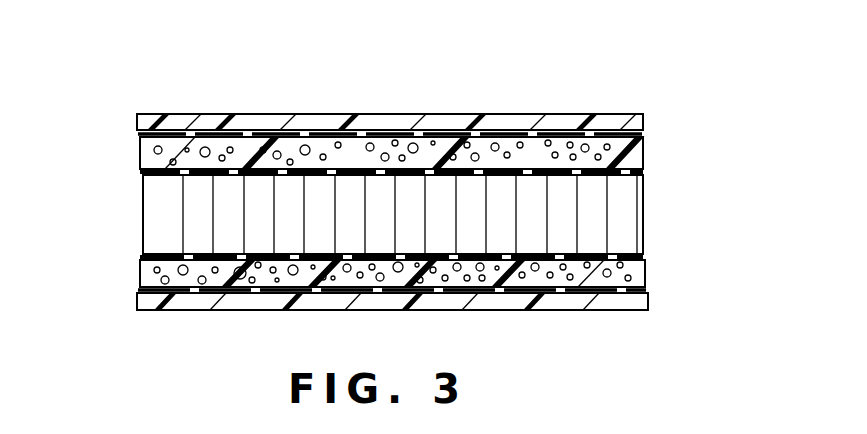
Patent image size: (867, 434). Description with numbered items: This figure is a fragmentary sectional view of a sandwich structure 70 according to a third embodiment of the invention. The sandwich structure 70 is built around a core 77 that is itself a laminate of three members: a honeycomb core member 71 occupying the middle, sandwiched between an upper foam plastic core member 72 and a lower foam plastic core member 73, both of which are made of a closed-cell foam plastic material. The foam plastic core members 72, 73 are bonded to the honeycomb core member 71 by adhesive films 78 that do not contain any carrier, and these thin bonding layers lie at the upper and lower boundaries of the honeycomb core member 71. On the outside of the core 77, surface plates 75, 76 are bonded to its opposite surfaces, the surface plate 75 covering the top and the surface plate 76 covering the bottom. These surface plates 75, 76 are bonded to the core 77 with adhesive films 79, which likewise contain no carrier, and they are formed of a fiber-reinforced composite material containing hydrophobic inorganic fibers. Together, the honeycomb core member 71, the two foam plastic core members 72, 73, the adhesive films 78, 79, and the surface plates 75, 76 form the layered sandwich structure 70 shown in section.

The sandwich structure 70 is at (213, 96).
The honeycomb core member 71 is at (623, 215).
The foam plastic core member 72 is at (633, 153).
The foam plastic core member 73 is at (637, 272).
The surface plate 75 is at (632, 122).
The surface plate 76 is at (635, 298).
The core 77 is at (747, 147).
The adhesive film 78 is at (140, 172).
The adhesive film 79 is at (140, 134).